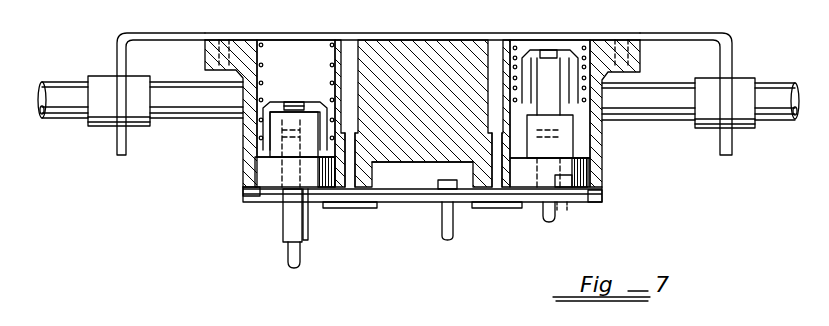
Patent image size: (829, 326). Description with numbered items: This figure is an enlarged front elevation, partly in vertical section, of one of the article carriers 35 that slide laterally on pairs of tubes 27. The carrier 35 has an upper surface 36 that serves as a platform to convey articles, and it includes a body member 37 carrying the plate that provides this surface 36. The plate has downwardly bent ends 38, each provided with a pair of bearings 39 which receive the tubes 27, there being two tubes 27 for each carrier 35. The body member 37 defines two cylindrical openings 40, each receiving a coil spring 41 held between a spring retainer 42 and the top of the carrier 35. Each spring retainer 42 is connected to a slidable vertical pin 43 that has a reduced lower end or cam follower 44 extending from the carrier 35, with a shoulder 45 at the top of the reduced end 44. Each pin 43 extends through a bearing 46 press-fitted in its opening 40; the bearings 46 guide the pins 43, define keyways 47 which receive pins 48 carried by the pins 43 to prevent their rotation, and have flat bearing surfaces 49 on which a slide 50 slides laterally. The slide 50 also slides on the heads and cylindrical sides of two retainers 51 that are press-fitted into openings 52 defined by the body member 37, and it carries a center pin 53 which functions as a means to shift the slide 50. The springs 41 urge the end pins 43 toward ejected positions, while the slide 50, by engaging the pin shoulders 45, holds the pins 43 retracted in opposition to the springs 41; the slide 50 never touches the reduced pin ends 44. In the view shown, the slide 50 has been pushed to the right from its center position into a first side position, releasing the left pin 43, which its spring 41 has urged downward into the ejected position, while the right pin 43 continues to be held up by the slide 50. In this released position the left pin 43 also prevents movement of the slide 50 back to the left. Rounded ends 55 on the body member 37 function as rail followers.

The tubes 27 is at (654, 82).
The article carrier 35 is at (416, 30).
The upper surface 36 is at (448, 36).
The body member 37 is at (478, 54).
The downwardly bent ends 38 is at (118, 136).
The bearings 39 is at (108, 78).
The cylindrical openings 40 is at (608, 130).
The coil spring 41 is at (331, 44).
The spring retainer 42 is at (313, 101).
The slidable vertical pin 43 is at (562, 100).
The reduced lower end 44 is at (548, 223).
The shoulder 45 is at (290, 250).
The bearing 46 is at (258, 172).
The keyway 47 is at (566, 186).
The pin 48 is at (589, 162).
The flat bearing surface 49 is at (274, 190).
The slide 50 is at (390, 203).
The retainer 51 is at (356, 209).
The openings 52 is at (468, 152).
The center pin 53 is at (447, 240).
The rounded ends 55 is at (243, 128).